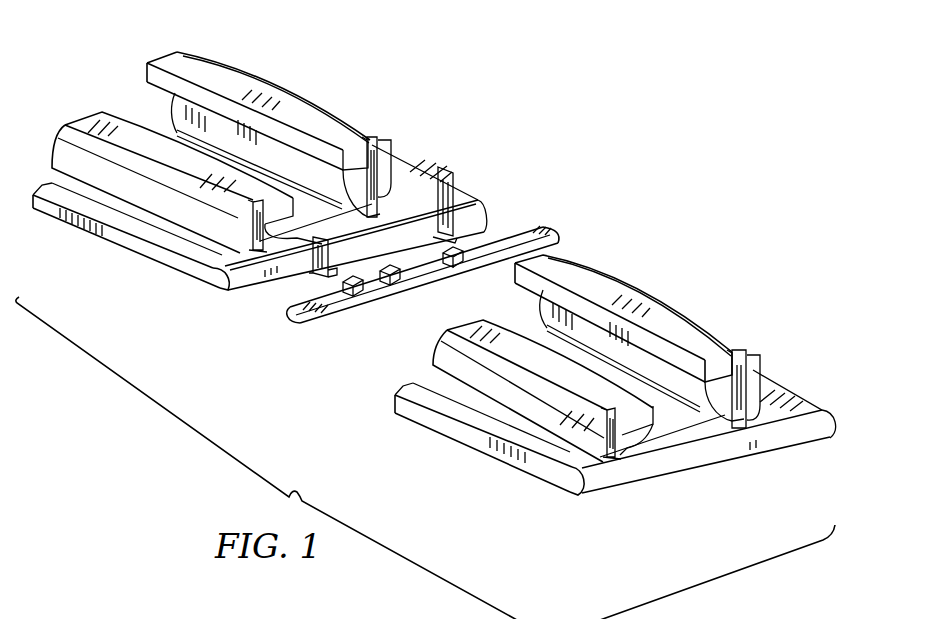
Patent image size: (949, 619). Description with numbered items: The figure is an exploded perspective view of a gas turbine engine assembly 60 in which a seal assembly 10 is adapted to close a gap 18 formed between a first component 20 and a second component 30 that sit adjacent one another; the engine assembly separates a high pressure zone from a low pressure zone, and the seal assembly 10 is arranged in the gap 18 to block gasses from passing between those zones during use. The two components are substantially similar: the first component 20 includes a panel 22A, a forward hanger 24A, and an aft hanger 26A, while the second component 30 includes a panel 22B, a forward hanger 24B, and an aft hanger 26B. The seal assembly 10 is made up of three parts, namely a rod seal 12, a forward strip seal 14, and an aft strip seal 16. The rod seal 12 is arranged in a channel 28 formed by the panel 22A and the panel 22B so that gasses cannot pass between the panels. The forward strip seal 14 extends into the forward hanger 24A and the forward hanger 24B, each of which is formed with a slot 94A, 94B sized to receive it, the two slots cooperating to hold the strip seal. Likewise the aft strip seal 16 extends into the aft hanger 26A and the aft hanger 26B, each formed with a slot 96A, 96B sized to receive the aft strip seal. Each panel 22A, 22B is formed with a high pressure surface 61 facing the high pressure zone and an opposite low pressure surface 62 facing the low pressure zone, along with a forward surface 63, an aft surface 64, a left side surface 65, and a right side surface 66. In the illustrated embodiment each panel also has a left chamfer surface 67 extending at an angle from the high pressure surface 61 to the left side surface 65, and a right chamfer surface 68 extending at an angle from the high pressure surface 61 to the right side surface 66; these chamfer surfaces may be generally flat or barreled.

The seal assembly 10 is at (547, 114).
The rod seal 12 is at (530, 218).
The forward strip seal 14 is at (310, 275).
The aft strip seal 16 is at (462, 191).
The gap 18 is at (342, 226).
The first component 20 is at (285, 85).
The panel 22A is at (82, 228).
The panel 22B is at (440, 433).
The forward hanger 24A is at (75, 118).
The forward hanger 24B is at (640, 430).
The aft hanger 26A is at (146, 62).
The aft hanger 26B is at (722, 372).
The channel 28 is at (353, 342).
The second component 30 is at (645, 280).
The gas turbine engine assembly 60 is at (685, 143).
The high pressure surface 61 is at (322, 227).
The low pressure surface 62 is at (152, 260).
The forward surface 63 is at (118, 230).
The aft surface 64 is at (427, 158).
The left side surface 65 is at (33, 208).
The right side surface 66 is at (233, 290).
The left chamfer surface 67 is at (41, 187).
The right chamfer surface 68 is at (223, 272).
The slot 94A is at (258, 197).
The slot 94B is at (611, 400).
The slot 96A is at (367, 133).
The slot 96B is at (734, 343).